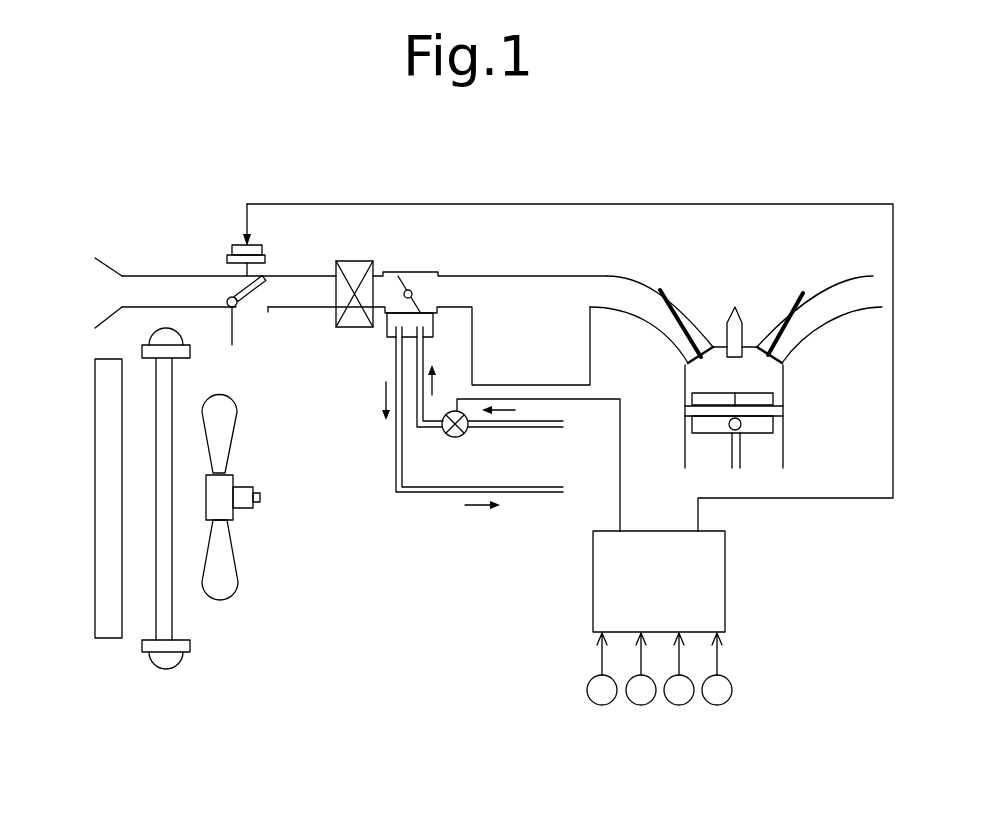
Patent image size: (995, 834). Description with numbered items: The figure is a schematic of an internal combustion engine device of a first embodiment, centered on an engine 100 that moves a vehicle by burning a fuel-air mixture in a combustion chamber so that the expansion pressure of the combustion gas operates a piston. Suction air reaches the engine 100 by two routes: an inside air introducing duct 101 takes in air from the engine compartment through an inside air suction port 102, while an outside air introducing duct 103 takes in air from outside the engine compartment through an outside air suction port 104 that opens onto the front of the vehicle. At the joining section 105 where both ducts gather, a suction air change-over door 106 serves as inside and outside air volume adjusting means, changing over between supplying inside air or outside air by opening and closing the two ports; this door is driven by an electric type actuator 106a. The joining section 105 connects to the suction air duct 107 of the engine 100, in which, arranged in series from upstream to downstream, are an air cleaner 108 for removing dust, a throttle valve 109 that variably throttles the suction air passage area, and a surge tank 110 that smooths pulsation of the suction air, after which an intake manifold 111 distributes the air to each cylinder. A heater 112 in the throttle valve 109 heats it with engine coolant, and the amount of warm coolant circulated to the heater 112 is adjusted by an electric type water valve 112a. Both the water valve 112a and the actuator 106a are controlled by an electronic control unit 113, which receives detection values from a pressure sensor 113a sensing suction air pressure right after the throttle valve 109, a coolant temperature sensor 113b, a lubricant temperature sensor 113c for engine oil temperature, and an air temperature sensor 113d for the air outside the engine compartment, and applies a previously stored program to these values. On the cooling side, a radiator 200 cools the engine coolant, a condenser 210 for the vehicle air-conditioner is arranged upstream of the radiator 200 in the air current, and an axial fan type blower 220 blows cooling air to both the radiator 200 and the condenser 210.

The engine 100 is at (783, 420).
The inside air introducing duct 101 is at (268, 335).
The inside air suction port 102 is at (248, 338).
The outside air introducing duct 103 is at (155, 292).
The outside air suction port 104 is at (92, 278).
The joining section 105 is at (232, 290).
The suction air change-over door 106 is at (257, 300).
The electric type actuator 106a is at (234, 246).
The suction air duct 107 is at (297, 276).
The air cleaner 108 is at (350, 261).
The throttle valve 109 is at (423, 278).
The surge tank 110 is at (527, 325).
The intake manifold 111 is at (634, 303).
The heater 112 is at (385, 330).
The electric type water valve 112a is at (455, 437).
The electronic control unit 113 is at (725, 590).
The pressure sensor 113a is at (602, 705).
The coolant temperature sensor 113b is at (641, 705).
The lubricant temperature sensor 113c is at (679, 705).
The air temperature sensor 113d is at (717, 705).
The radiator 200 is at (382, 460).
The condenser 210 is at (110, 630).
The axial fan type blower 220 is at (223, 510).